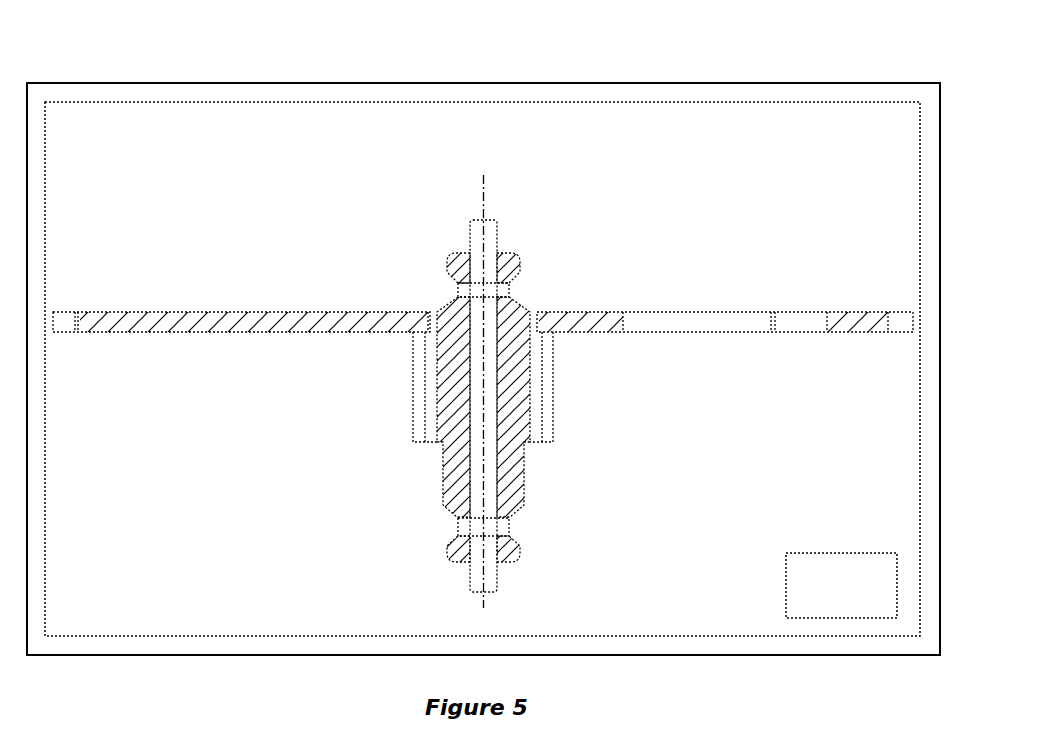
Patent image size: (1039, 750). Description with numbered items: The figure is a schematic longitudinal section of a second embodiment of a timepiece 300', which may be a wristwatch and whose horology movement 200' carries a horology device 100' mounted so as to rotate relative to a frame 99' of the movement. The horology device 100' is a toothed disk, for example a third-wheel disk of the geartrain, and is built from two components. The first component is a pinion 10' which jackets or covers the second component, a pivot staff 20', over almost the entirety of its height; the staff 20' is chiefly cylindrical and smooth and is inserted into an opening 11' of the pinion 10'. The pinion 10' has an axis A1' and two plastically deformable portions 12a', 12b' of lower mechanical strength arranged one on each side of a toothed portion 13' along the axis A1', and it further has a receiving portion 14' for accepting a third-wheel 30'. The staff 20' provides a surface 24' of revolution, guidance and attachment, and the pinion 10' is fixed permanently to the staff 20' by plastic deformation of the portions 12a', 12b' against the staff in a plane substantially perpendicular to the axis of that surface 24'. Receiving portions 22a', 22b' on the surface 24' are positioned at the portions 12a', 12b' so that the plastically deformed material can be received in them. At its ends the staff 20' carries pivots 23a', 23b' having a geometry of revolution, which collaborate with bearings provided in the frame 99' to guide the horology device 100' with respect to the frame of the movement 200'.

The horology device 100' is at (491, 373).
The horology movement 200' is at (482, 330).
The system housing 300' is at (483, 340).
The frame 99' is at (841, 585).
The third-wheel 30' is at (483, 287).
The axis A1' is at (401, 391).
The pivot staff 20' is at (483, 404).
The surface 24' is at (424, 406).
The opening 11' is at (440, 233).
The pivot 23b' is at (531, 236).
The pivot 23a' is at (444, 576).
The receiving portion 22a' is at (424, 287).
The receiving portion 22b' is at (423, 528).
The plastically deformable portion 12a' is at (576, 286).
The plastically deformable portion 12b' is at (575, 531).
The toothed portion 13' is at (558, 407).
The pinion 10' is at (488, 387).
The receiving portion 14' is at (427, 387).